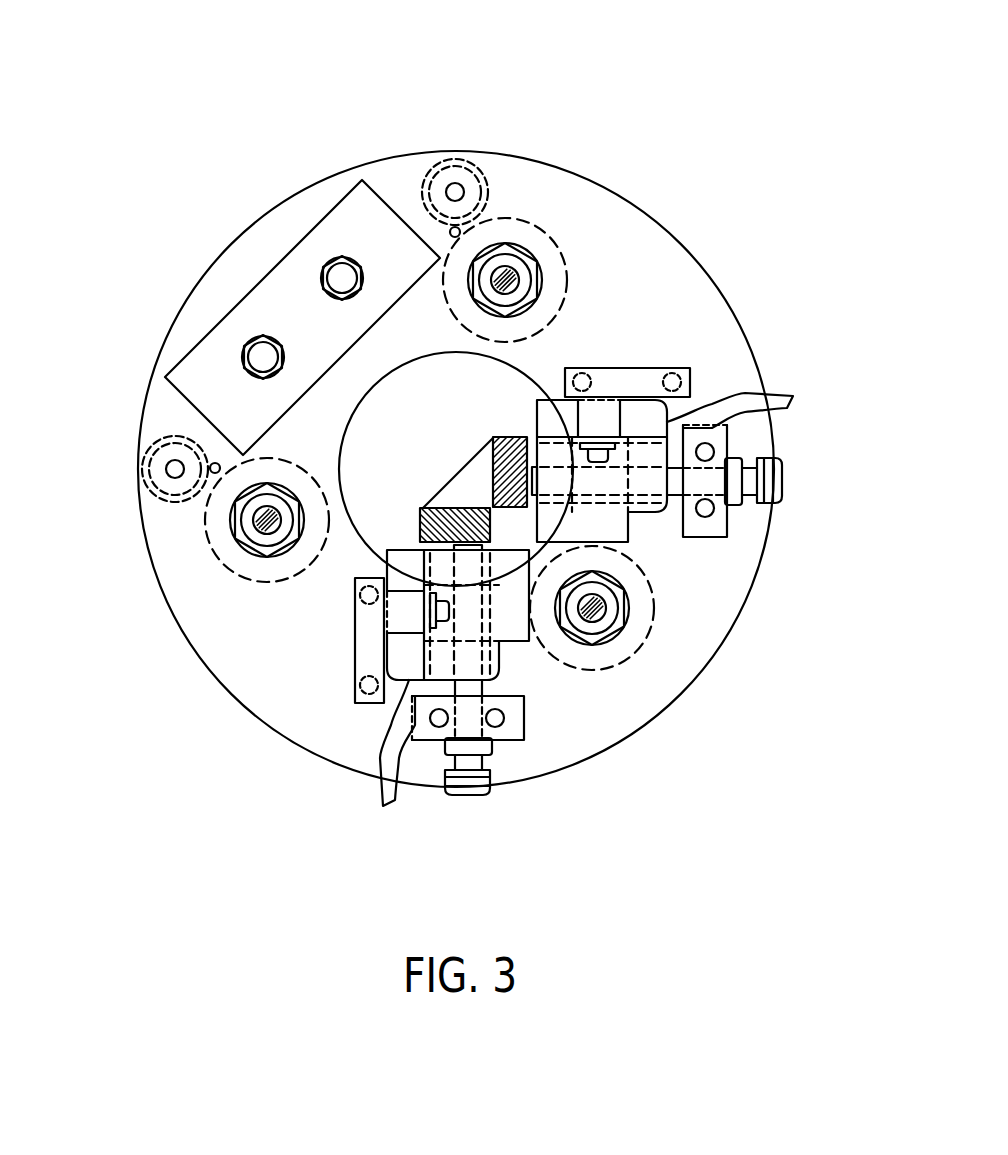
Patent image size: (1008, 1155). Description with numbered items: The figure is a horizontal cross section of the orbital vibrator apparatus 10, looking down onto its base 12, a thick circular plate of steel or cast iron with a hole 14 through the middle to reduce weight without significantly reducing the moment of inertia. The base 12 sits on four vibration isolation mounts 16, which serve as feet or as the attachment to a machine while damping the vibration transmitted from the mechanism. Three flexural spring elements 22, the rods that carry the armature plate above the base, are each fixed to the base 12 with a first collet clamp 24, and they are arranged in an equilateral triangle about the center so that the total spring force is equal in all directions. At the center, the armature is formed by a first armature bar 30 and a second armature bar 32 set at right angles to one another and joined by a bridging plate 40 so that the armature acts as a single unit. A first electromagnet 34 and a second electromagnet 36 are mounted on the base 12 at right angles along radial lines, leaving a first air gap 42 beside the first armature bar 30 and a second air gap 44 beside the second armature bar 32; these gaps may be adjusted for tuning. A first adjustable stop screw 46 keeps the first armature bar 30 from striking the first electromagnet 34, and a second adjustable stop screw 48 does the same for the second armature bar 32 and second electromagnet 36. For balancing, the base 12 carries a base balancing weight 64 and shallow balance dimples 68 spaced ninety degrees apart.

The orbital vibrator apparatus 10 is at (510, 104).
The base 12 is at (653, 218).
The hole 14 is at (373, 385).
The vibration isolation mounts 16 is at (443, 163).
The flexural spring elements 22 is at (507, 282).
The first collet clamp 24 is at (538, 267).
The first armature bar 30 is at (487, 447).
The second armature bar 32 is at (465, 508).
The first electromagnet 34 is at (645, 515).
The second electromagnet 36 is at (520, 673).
The bridging plate 40 is at (463, 475).
The first air gap 42 is at (532, 435).
The second air gap 44 is at (418, 546).
The first adjustable stop screw 46 is at (782, 473).
The second adjustable stop screw 48 is at (472, 795).
The base balancing weight 64 is at (207, 333).
The balance dimples 68 is at (450, 223).